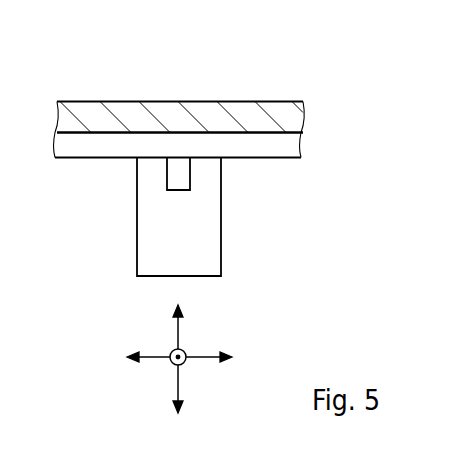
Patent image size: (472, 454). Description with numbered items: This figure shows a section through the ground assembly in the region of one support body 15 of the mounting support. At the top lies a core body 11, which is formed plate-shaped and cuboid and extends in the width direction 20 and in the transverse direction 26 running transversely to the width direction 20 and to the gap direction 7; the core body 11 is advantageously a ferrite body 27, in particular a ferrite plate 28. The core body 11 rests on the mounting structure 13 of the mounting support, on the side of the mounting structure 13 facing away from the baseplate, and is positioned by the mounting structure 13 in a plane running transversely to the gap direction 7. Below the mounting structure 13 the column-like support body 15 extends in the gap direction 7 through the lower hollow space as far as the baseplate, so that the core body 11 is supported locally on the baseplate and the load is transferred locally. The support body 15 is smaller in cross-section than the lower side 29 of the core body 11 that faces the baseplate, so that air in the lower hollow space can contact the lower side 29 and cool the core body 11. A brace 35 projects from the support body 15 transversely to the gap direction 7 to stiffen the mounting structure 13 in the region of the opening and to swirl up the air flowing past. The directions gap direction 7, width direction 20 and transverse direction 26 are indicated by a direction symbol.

The core body 11 is at (179, 82).
The ferrite body 27 is at (179, 82).
The ferrite plate 28 is at (178, 101).
The mounting structure 13 is at (303, 143).
The lower side 29 is at (263, 134).
The support body 15 is at (145, 213).
The brace 35 is at (178, 191).
The gap direction 7 is at (182, 330).
The width direction 20 is at (203, 363).
The transverse direction 26 is at (170, 367).